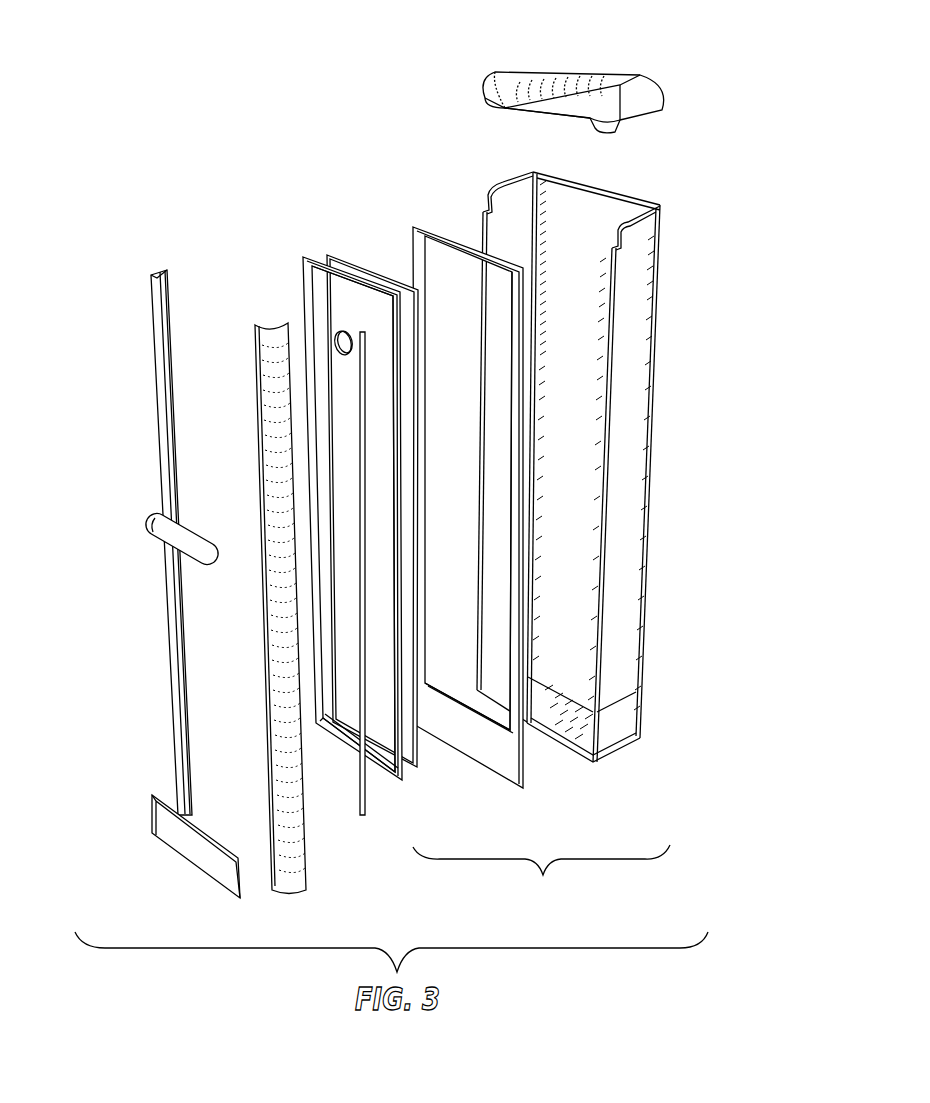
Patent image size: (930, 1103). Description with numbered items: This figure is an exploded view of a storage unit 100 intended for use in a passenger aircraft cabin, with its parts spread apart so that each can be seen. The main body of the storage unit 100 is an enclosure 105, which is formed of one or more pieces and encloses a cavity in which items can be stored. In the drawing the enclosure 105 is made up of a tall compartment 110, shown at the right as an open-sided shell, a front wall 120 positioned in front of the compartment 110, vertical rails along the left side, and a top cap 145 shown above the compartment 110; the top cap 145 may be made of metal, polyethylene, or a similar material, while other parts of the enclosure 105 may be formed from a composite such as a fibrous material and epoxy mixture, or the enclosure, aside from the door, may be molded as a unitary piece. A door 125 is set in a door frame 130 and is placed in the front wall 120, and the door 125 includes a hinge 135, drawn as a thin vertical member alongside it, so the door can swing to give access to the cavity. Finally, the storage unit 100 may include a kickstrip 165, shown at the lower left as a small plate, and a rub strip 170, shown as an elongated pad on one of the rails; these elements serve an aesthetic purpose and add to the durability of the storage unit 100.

The storage unit 100 is at (165, 62).
The enclosure 105 is at (541, 879).
The compartment 110 is at (640, 582).
The front wall 120 is at (428, 232).
The door 125 is at (340, 262).
The door frame 130 is at (303, 287).
The hinge 135 is at (368, 797).
The top cap 145 is at (578, 82).
The kickstrip 165 is at (185, 845).
The rub strip 170 is at (148, 528).